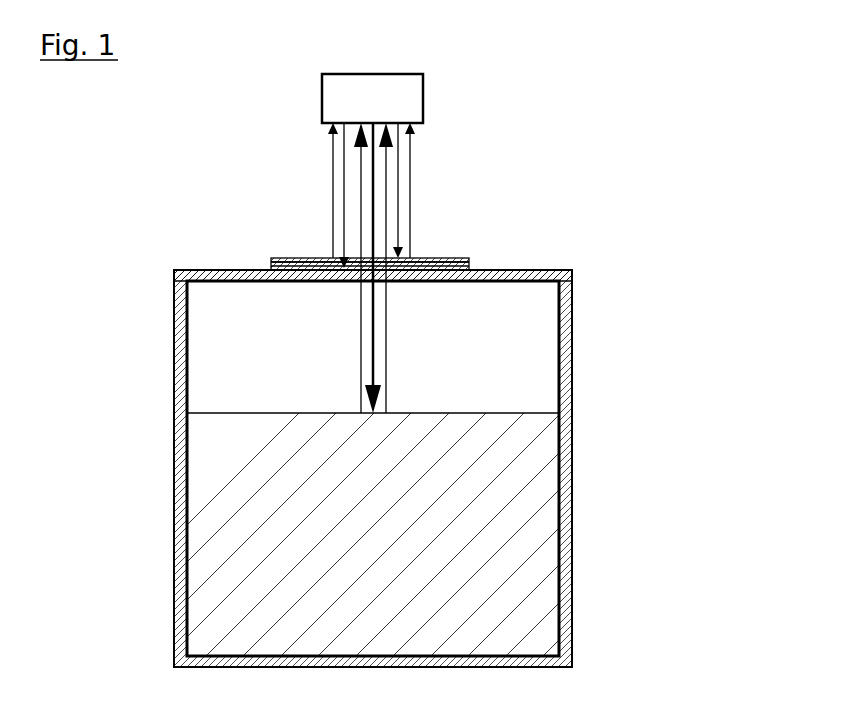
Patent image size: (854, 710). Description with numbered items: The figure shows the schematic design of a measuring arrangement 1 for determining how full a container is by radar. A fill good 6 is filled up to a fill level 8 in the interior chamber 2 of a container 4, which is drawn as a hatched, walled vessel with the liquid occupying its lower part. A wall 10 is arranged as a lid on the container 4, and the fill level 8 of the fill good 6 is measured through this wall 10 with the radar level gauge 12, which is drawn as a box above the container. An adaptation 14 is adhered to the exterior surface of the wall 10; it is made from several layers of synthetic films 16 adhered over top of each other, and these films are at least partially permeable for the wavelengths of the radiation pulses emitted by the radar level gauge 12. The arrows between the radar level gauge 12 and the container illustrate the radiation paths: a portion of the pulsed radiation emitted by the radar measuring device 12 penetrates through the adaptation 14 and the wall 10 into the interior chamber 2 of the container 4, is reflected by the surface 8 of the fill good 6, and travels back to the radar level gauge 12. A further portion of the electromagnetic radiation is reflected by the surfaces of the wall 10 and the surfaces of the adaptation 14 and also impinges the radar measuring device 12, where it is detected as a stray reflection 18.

The measuring arrangement 1 is at (678, 141).
The interior chamber 2 is at (494, 348).
The container 4 is at (185, 372).
The fill good 6 is at (448, 523).
The fill level 8 is at (512, 413).
The wall 10 is at (202, 279).
The radar level gauge 12 is at (389, 113).
The adaptation 14 is at (480, 249).
The synthetic films 16 is at (302, 265).
The stray reflection 18 is at (412, 182).